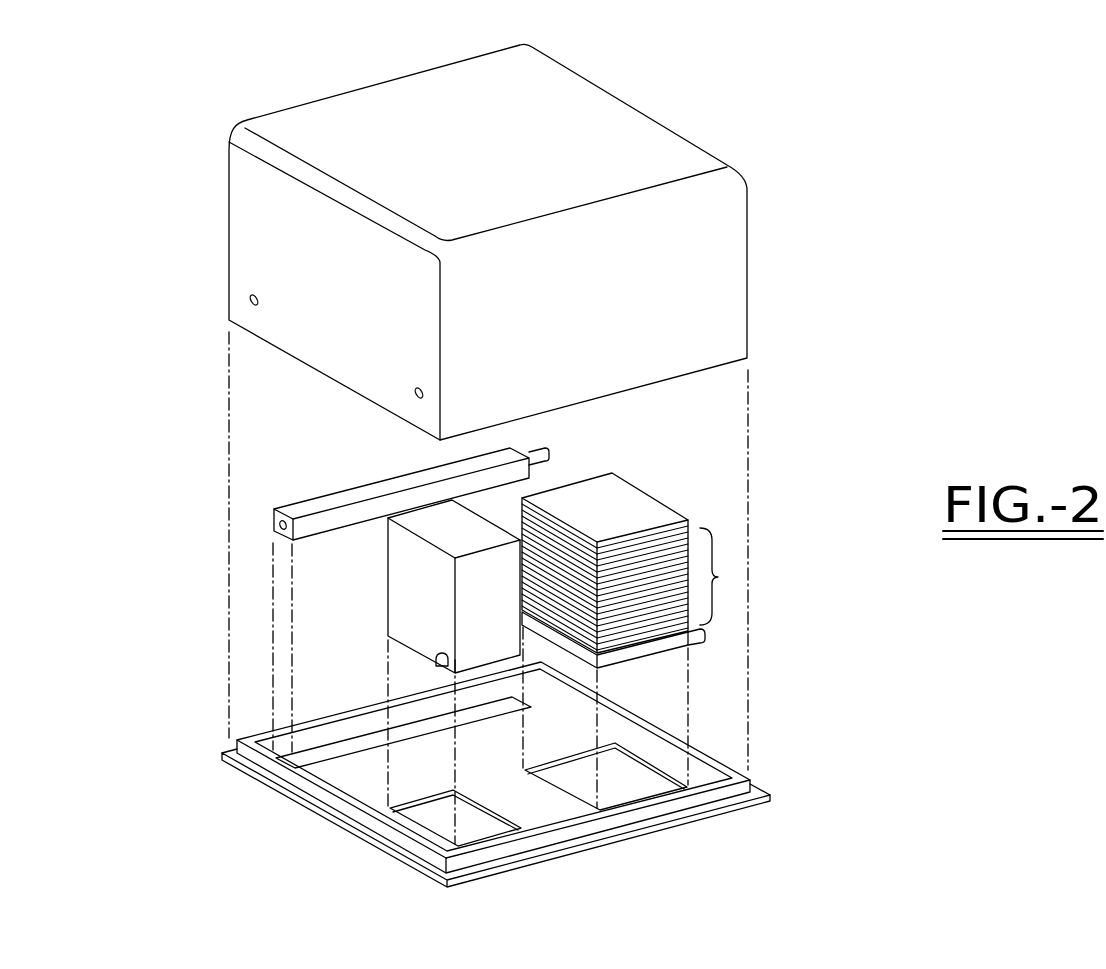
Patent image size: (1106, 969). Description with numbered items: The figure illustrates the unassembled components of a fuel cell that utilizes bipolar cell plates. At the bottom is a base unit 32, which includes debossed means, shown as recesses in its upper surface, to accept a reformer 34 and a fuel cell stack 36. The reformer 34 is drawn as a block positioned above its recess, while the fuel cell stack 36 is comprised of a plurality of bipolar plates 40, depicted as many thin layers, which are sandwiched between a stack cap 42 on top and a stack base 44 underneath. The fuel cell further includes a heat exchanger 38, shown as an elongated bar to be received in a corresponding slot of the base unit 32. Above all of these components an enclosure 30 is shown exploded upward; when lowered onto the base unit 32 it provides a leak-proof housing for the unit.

The enclosure 30 is at (582, 103).
The base unit 32 is at (598, 843).
The reformer 34 is at (413, 583).
The fuel cell stack 36 is at (642, 603).
The heat exchanger 38 is at (377, 487).
The bipolar plates 40 is at (729, 576).
The stack cap 42 is at (632, 490).
The stack base 44 is at (633, 657).